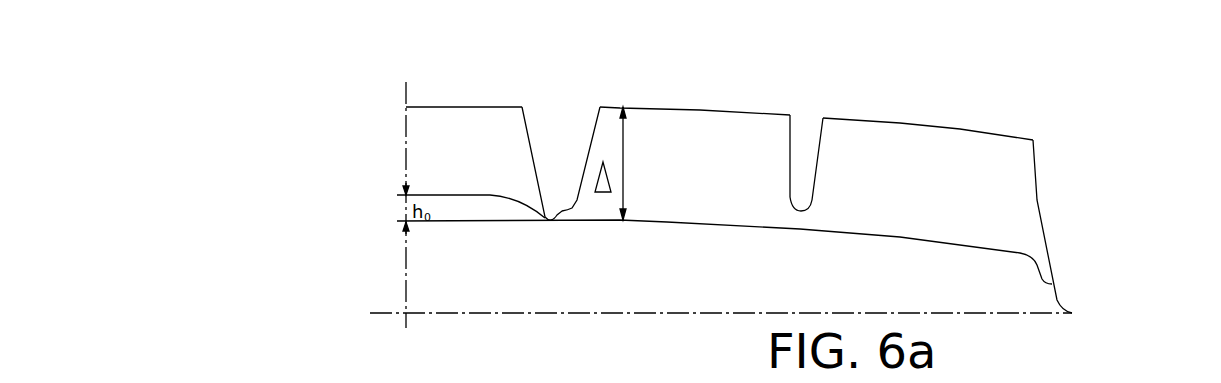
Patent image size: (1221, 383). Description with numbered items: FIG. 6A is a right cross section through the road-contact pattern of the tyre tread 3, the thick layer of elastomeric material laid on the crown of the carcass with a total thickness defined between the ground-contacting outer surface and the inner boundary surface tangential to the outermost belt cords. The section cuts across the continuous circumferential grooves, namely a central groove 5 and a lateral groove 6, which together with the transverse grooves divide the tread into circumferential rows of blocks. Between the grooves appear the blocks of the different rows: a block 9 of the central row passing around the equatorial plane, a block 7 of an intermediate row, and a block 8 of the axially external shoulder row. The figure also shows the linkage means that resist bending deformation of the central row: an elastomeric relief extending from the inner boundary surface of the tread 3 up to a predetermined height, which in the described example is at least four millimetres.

The tread 3 is at (642, 152).
The central circumferential groove 5 is at (562, 156).
The lateral circumferential groove 6 is at (802, 153).
The intermediate row block 7 is at (733, 142).
The shoulder row block 8 is at (987, 178).
The central row block 9 is at (428, 152).